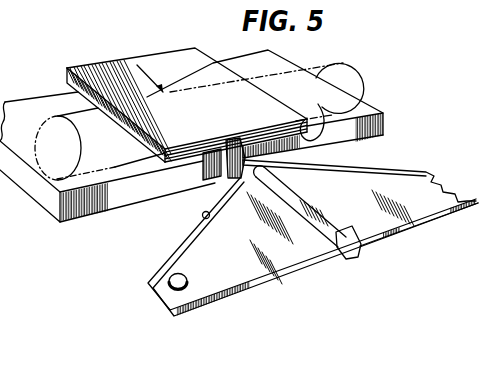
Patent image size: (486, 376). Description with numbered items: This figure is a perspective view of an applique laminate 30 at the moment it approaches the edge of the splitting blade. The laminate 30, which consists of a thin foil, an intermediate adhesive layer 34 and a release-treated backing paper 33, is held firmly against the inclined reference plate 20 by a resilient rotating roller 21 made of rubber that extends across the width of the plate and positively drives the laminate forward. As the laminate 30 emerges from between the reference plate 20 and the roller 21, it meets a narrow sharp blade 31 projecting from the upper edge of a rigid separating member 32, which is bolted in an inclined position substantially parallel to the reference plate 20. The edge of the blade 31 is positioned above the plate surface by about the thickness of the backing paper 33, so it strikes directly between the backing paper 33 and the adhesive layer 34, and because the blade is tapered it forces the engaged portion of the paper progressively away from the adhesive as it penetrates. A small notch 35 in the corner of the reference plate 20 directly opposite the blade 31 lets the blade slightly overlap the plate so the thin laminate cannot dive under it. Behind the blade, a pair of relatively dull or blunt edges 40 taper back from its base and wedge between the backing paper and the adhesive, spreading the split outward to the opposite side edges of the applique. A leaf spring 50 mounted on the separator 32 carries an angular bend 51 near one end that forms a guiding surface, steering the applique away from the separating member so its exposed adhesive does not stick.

The reference plate 20 is at (243, 63).
The resilient rotating roller 21 is at (358, 73).
The applique laminate 30 is at (157, 50).
The narrow sharp blade 31 is at (235, 148).
The separating member 32 is at (406, 211).
The backing paper 33 is at (311, 114).
The intermediate adhesive layer 34 is at (127, 126).
The notch 35 is at (218, 182).
The blunt spreading edges 40 is at (209, 219).
The leaf spring 50 is at (343, 231).
The angular bend 51 is at (296, 190).